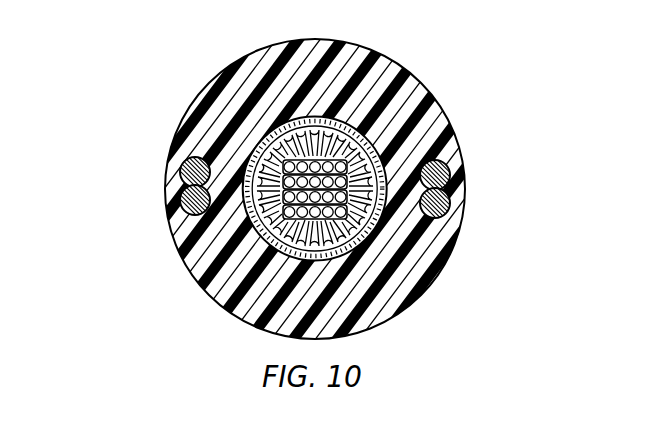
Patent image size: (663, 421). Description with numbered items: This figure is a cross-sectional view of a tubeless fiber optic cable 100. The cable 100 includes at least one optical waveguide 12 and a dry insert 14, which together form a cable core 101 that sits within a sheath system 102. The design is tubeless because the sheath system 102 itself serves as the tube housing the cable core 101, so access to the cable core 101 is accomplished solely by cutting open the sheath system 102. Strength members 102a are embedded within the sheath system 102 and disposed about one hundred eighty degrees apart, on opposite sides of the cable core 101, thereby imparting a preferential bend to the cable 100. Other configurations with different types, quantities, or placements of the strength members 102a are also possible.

The fiber optic cable 100 is at (136, 90).
The cable core 101 is at (383, 128).
The sheath system 102 is at (200, 125).
The strength members 102a is at (452, 195).
The optical waveguide 12 is at (378, 226).
The dry insert 14 is at (258, 209).